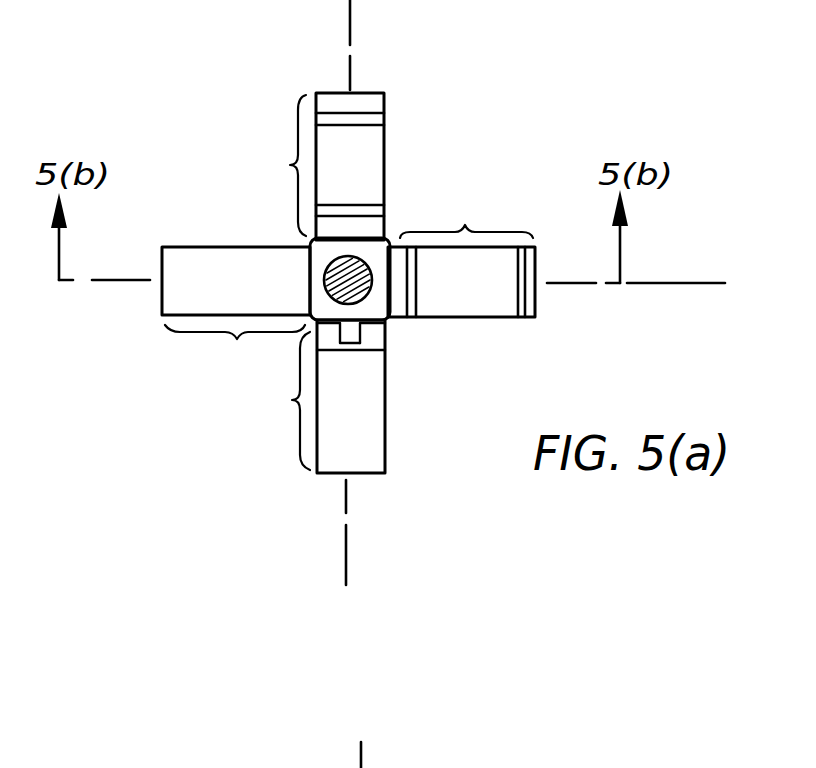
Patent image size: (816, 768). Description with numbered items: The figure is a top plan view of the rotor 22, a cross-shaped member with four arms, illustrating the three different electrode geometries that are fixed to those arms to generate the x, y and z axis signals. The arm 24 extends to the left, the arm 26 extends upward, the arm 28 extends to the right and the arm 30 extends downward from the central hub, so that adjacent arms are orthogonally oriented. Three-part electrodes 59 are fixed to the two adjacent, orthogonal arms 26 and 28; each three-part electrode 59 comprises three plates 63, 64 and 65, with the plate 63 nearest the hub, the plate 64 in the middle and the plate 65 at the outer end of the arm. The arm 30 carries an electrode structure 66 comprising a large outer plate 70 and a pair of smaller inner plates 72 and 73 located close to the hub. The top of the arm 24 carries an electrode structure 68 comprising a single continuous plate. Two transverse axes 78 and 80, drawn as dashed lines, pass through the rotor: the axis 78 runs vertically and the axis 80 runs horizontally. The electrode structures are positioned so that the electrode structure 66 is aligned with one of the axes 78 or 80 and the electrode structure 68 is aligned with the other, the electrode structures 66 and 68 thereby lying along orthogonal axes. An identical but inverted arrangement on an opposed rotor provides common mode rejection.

The rotor 22 is at (208, 130).
The arm 24 is at (239, 238).
The arm 26 is at (412, 125).
The arm 28 is at (496, 262).
The arm 30 is at (398, 432).
The three-part electrode 59 is at (395, 166).
The plate 63 is at (373, 230).
The plate 64 is at (373, 175).
The plate 65 is at (375, 107).
The electrode structure 66 is at (284, 401).
The electrode structure 68 is at (235, 349).
The large outer plate 70 is at (316, 465).
The inner plate 72 is at (318, 332).
The inner plate 73 is at (366, 332).
The transverse axis 78 is at (349, 62).
The transverse axis 80 is at (657, 283).